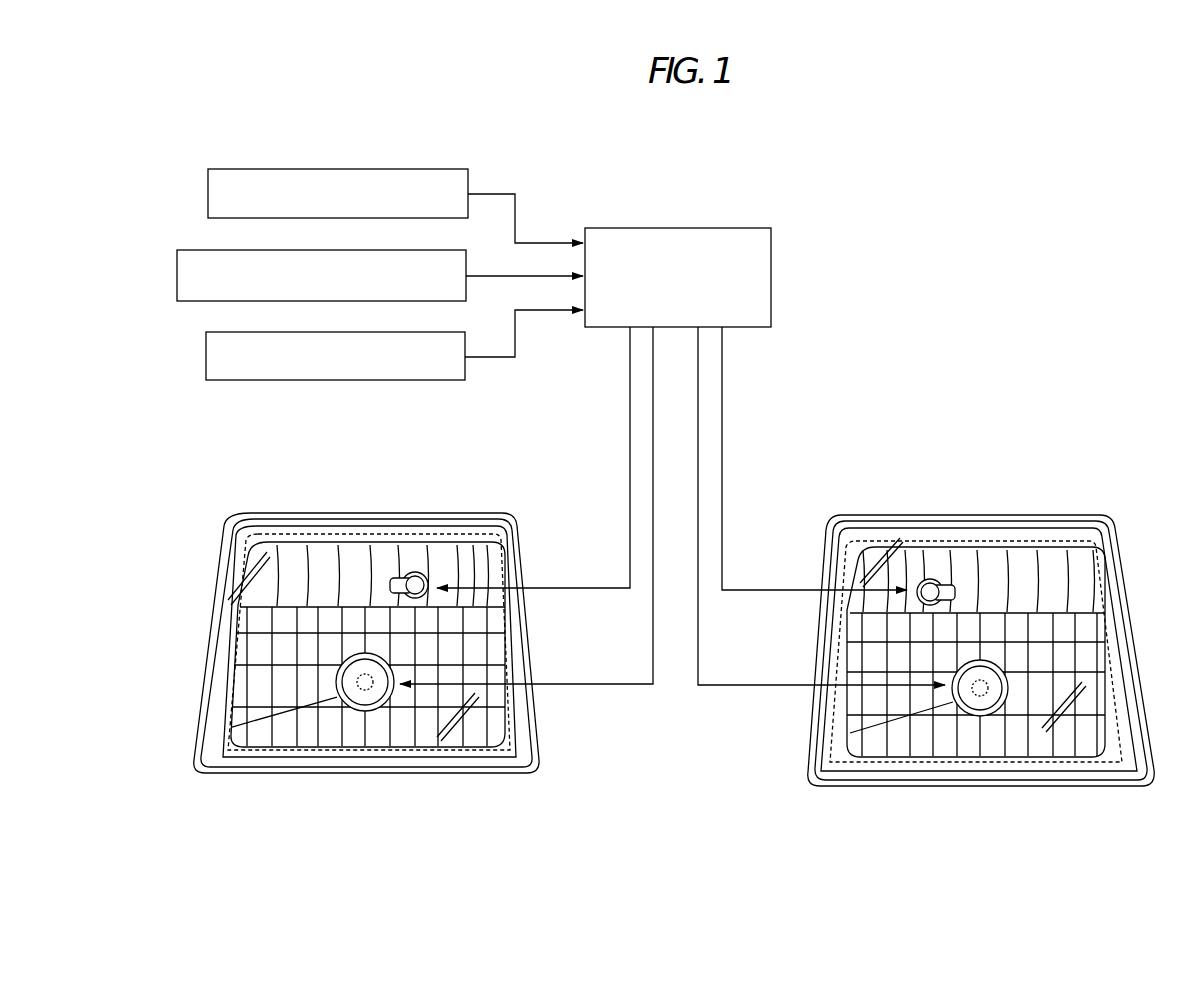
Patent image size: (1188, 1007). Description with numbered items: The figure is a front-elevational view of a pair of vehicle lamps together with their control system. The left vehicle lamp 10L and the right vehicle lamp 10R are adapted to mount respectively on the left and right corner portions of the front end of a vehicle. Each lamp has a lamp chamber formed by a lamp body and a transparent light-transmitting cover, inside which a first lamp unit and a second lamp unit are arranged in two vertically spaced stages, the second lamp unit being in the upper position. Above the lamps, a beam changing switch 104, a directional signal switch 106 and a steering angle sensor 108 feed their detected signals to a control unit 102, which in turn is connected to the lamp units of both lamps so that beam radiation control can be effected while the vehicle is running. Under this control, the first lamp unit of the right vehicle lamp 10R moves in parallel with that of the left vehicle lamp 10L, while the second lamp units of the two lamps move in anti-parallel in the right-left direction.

The right vehicle lamp 10R is at (330, 482).
The left vehicle lamp 10L is at (1023, 486).
The control unit 102 is at (771, 278).
The beam changing switch 104 is at (462, 218).
The directional signal switch 106 is at (460, 301).
The steering angle sensor 108 is at (460, 380).